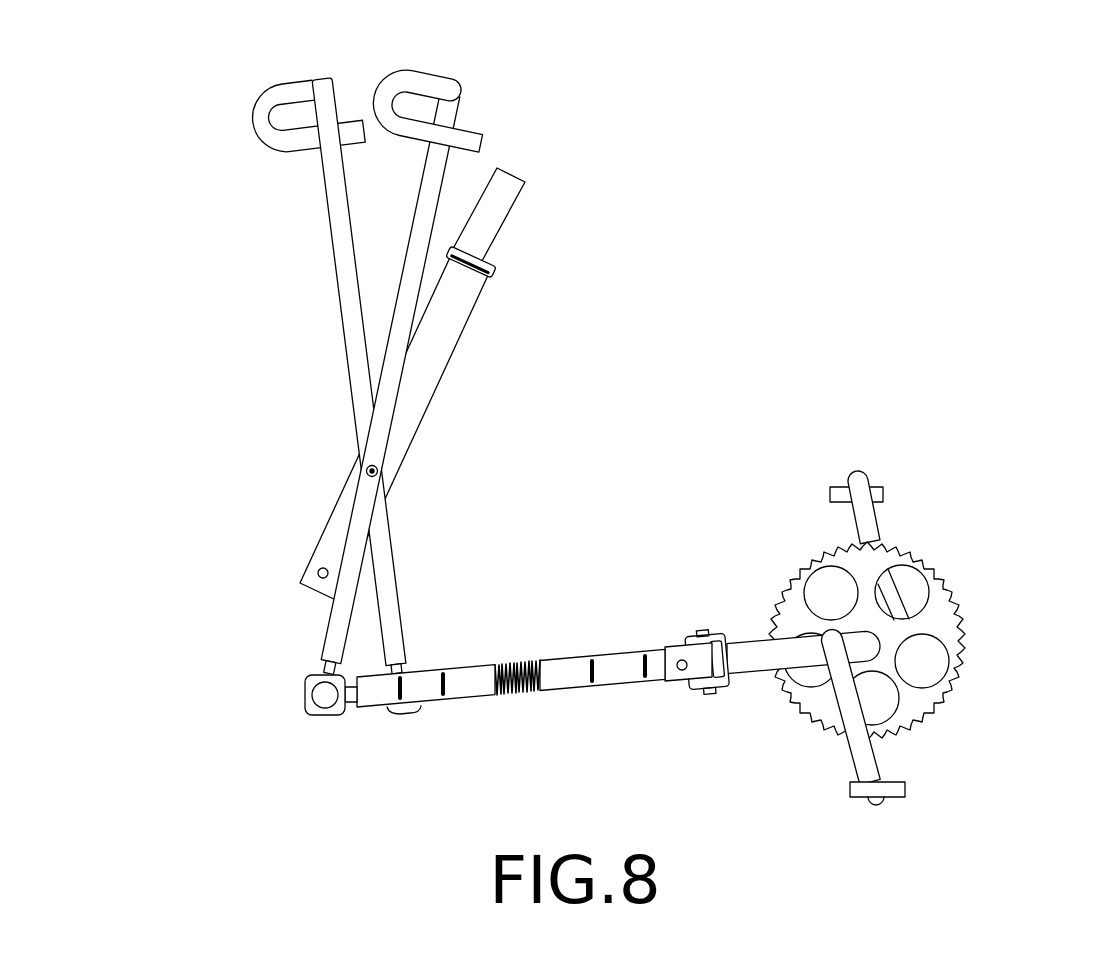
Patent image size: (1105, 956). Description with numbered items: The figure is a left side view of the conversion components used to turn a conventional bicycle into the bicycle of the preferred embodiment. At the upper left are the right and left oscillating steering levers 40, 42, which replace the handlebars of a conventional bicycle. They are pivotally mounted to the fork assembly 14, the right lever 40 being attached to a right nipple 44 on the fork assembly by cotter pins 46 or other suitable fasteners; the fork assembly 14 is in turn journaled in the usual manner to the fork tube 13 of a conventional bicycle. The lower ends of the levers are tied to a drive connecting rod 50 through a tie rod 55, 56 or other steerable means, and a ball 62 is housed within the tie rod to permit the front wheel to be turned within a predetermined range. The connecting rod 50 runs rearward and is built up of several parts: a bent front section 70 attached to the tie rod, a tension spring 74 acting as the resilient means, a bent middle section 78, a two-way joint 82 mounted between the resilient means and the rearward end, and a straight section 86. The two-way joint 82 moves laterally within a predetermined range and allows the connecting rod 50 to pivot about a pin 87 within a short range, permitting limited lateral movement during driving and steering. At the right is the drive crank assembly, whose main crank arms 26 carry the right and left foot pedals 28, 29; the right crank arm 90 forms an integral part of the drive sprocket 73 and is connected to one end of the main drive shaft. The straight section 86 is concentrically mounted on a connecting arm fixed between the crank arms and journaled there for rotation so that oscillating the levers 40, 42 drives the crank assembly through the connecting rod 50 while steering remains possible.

The fork tube 13 is at (510, 213).
The fork assembly 14 is at (464, 330).
The main crank arms 26 is at (877, 517).
The right foot pedal 28 is at (850, 487).
The left foot pedal 29 is at (907, 789).
The right oscillating steering lever 40 is at (328, 213).
The left oscillating steering lever 42 is at (416, 213).
The right nipple 44 is at (380, 470).
The cotter pins 46 is at (288, 499).
The right drive connecting rod 50 is at (555, 567).
The right tie rod 55 is at (397, 712).
The left tie rod 56 is at (296, 698).
The ball 62 is at (308, 712).
The front section 70 is at (427, 671).
The sprocket 73 is at (913, 712).
The right tension spring 74 is at (517, 695).
The middle section 78 is at (579, 656).
The two-way joint 82 is at (666, 682).
The straight section 86 is at (745, 684).
The pin 87 is at (707, 630).
The right crank arm 90 is at (897, 630).